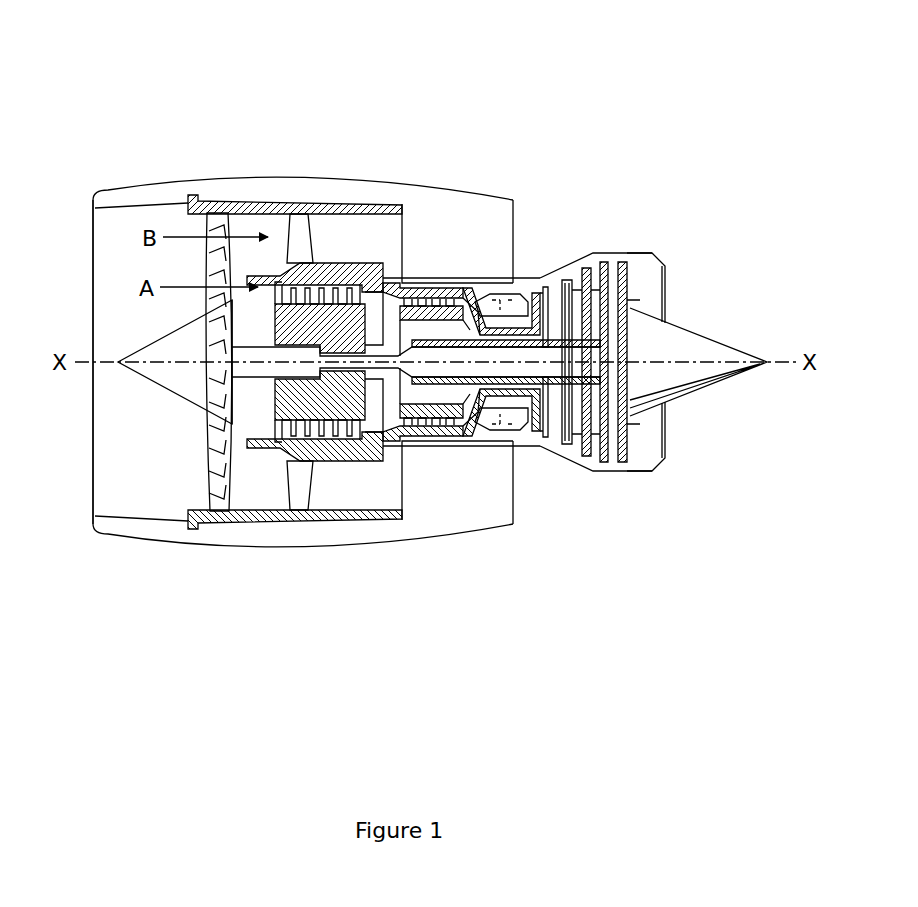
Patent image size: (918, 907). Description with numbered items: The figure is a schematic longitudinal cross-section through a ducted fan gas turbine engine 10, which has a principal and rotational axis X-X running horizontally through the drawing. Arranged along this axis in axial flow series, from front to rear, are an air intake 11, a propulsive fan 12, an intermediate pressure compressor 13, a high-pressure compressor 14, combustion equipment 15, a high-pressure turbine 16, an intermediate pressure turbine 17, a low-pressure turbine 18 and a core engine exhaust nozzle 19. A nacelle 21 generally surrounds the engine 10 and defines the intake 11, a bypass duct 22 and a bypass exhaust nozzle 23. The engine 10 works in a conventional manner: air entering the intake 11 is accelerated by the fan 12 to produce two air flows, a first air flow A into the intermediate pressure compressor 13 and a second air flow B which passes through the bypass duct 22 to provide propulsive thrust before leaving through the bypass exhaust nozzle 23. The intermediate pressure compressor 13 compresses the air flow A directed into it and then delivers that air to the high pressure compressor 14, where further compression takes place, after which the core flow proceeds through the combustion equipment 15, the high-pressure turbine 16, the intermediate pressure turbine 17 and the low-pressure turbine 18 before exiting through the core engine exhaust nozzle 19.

The ducted fan gas turbine engine 10 is at (158, 156).
The air intake 11 is at (146, 210).
The propulsive fan 12 is at (207, 470).
The intermediate pressure compressor 13 is at (330, 446).
The high-pressure compressor 14 is at (437, 281).
The combustion equipment 15 is at (480, 430).
The high-pressure turbine 16 is at (527, 437).
The intermediate pressure turbine 17 is at (555, 282).
The low-pressure turbine 18 is at (578, 462).
The core engine exhaust nozzle 19 is at (655, 262).
The nacelle 21 is at (305, 177).
The bypass duct 22 is at (482, 241).
The bypass exhaust nozzle 23 is at (513, 200).